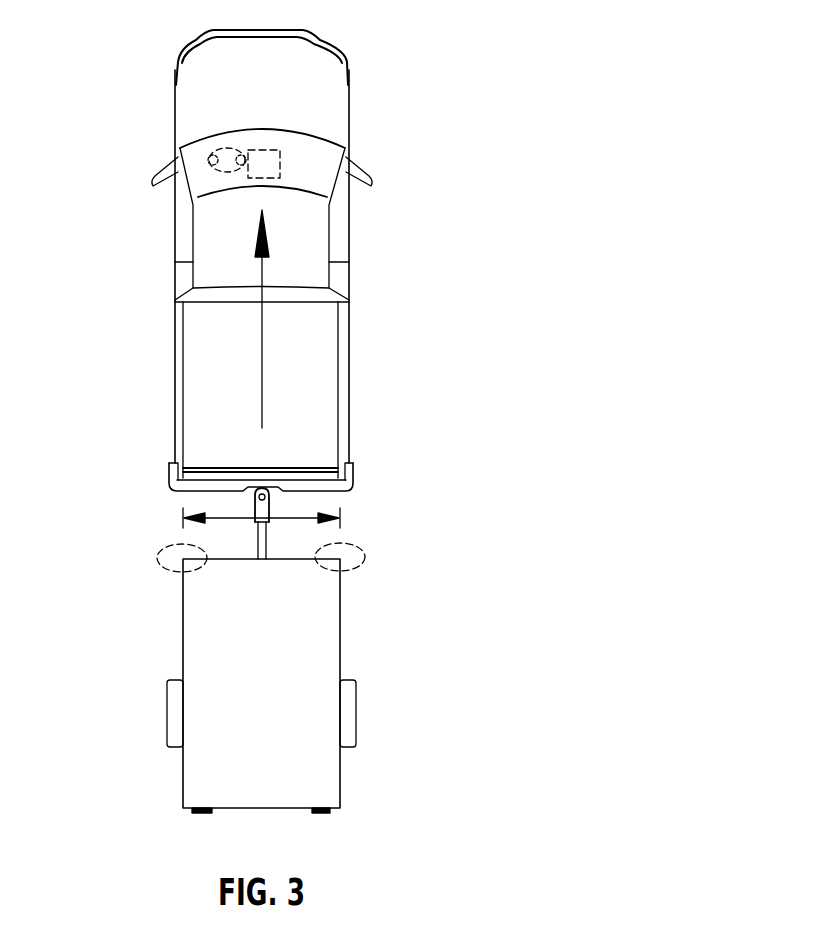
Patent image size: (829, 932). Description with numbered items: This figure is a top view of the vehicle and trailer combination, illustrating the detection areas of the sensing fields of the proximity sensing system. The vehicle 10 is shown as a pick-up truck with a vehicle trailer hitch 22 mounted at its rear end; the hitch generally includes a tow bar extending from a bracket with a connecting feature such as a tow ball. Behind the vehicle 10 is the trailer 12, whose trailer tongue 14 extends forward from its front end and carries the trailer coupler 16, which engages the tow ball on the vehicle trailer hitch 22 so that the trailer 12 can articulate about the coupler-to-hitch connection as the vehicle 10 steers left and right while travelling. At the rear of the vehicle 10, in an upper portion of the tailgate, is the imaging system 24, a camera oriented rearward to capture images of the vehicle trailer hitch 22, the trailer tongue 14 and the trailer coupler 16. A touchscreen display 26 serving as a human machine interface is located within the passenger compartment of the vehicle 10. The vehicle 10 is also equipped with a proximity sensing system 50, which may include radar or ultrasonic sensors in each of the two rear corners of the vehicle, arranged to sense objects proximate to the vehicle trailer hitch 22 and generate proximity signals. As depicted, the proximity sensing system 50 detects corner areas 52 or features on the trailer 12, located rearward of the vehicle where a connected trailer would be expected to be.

The vehicle 10 is at (383, 112).
The trailer 12 is at (180, 652).
The trailer tongue 14 is at (267, 540).
The trailer coupler 16 is at (257, 519).
The vehicle trailer hitch 22 is at (260, 505).
The imaging system 24 is at (262, 480).
The touchscreen display 26 is at (265, 155).
The proximity sensing system 50 is at (178, 483).
The corner areas 52 is at (160, 554).